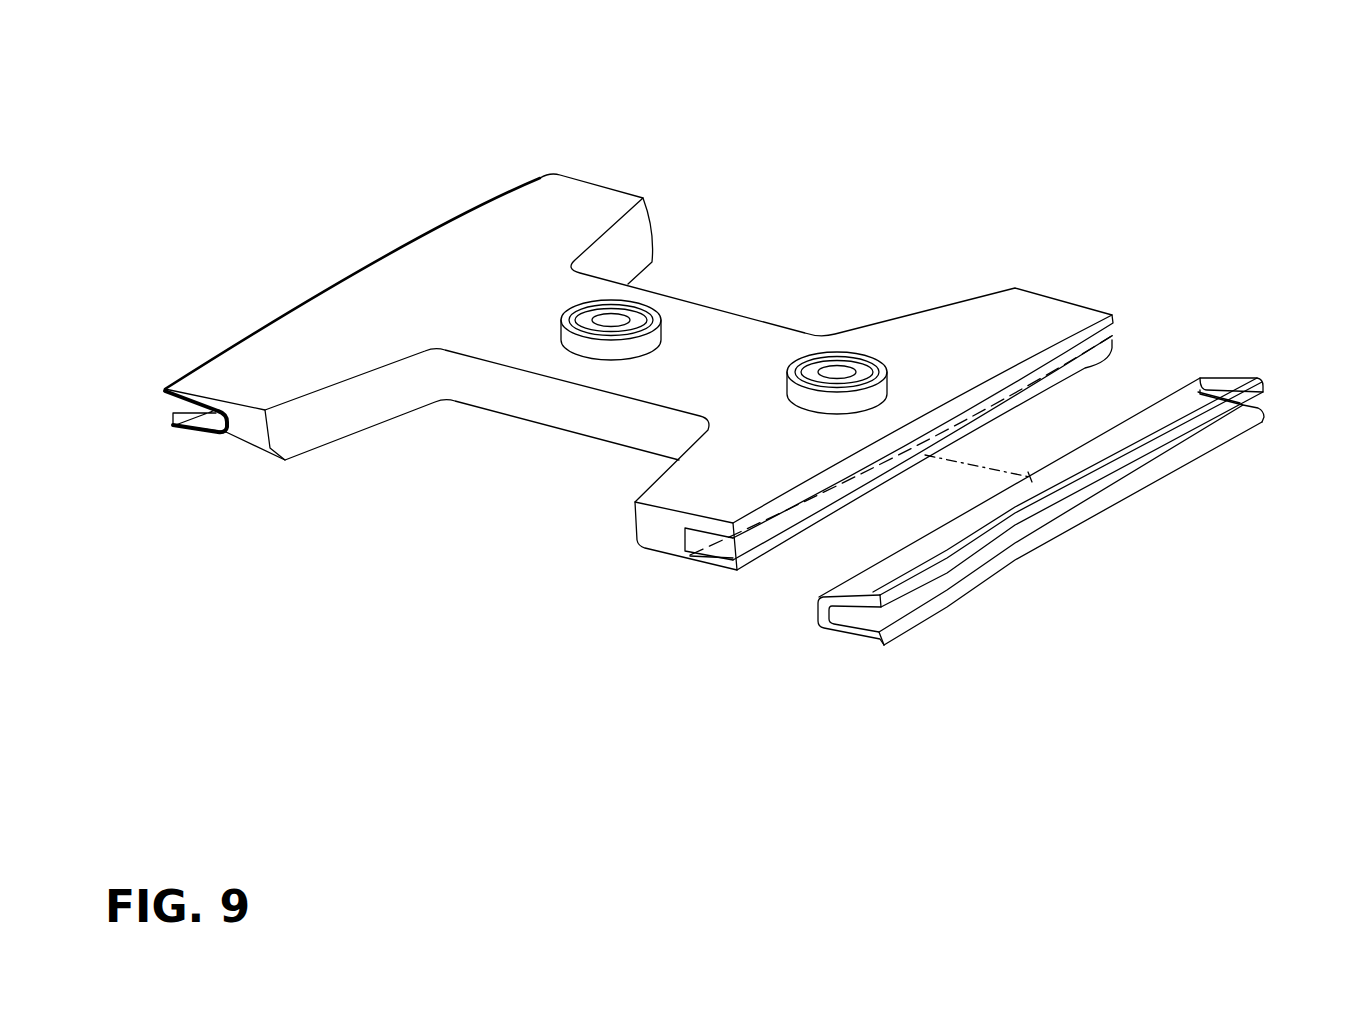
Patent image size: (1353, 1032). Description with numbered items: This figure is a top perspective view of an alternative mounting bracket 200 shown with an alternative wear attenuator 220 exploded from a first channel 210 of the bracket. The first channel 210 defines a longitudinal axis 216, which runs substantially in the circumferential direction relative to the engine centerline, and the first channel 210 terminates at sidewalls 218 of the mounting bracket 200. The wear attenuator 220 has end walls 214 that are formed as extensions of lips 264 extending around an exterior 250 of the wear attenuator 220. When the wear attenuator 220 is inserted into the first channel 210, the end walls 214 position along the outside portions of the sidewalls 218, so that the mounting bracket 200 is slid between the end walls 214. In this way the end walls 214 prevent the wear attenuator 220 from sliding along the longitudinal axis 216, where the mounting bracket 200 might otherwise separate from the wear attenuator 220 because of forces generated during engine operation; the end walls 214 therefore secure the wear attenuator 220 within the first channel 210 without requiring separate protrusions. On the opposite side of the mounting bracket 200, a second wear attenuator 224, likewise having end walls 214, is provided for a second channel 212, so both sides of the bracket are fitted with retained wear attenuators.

The mounting bracket 200 is at (848, 53).
The second wear attenuator 224 is at (399, 236).
The sidewalls 218 is at (593, 177).
The longitudinal axis 216 is at (697, 565).
The first channel 210 is at (690, 556).
The second channel 212 is at (172, 432).
The lips 264 is at (182, 437).
The end walls 214 is at (165, 393).
The wear attenuator 220 is at (985, 597).
The exterior 250 is at (1198, 392).